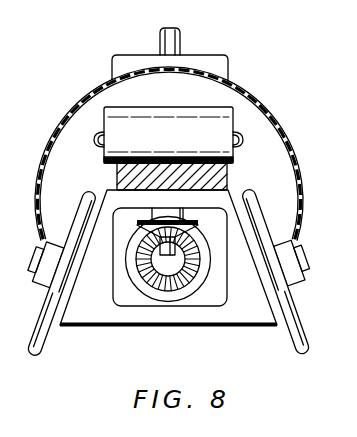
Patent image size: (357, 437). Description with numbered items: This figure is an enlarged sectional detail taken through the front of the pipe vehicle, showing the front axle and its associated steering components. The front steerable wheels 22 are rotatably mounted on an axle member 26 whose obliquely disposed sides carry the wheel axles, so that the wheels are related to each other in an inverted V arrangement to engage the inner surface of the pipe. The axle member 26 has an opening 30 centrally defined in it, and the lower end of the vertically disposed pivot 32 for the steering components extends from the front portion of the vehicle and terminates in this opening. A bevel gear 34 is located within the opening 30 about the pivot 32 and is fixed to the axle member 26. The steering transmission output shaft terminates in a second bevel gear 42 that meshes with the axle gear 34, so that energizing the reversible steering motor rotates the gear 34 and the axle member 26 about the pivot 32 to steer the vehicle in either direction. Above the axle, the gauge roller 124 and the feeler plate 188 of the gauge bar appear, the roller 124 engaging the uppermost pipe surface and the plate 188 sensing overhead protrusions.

The front steerable wheels 22 is at (43, 347).
The axle member 26 is at (242, 327).
The opening 30 is at (113, 290).
The pivot 32 is at (175, 253).
The bevel gear 34 is at (138, 223).
The bevel gear 42 is at (178, 285).
The gauge wheel or roller 124 is at (181, 41).
The feeler plate 188 is at (229, 67).